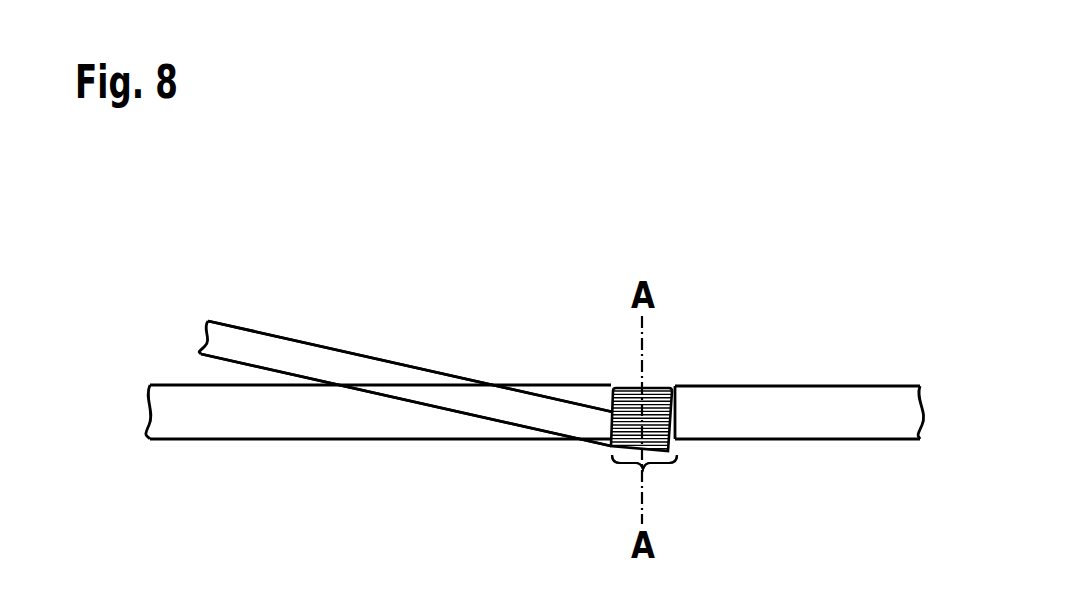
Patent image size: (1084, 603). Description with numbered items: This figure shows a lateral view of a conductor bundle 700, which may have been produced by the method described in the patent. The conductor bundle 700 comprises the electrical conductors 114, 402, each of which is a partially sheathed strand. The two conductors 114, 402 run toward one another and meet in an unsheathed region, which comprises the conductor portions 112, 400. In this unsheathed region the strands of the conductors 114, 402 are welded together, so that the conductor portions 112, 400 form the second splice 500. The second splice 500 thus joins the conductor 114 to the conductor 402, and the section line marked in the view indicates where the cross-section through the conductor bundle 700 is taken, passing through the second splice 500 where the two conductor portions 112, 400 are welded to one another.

The conductor bundle 700 is at (197, 302).
The conductor 114 is at (205, 337).
The conductor 402 is at (855, 400).
The second splice 500 is at (667, 368).
The conductor portion 112 is at (643, 469).
The conductor portion 400 is at (724, 484).